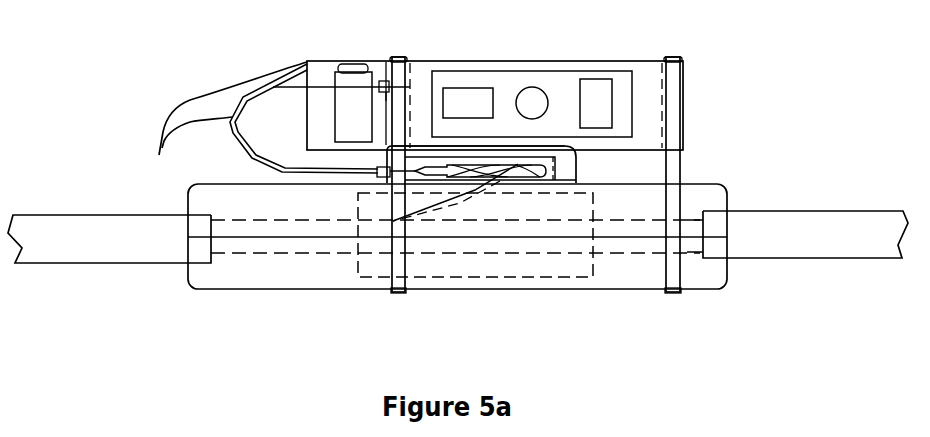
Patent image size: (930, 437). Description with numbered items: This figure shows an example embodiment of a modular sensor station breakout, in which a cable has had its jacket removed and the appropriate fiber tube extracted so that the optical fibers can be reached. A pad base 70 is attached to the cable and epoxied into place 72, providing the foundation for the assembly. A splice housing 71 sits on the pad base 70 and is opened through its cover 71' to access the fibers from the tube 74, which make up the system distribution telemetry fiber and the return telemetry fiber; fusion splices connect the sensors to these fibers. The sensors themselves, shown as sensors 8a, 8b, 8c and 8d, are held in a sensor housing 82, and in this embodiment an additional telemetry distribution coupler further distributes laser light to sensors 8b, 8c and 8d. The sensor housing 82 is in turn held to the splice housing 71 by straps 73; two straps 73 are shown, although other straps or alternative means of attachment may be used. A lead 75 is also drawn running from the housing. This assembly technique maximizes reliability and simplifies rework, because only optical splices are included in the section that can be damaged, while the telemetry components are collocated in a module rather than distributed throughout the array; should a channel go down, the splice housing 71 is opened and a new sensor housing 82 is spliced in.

The pad base 70 is at (238, 200).
The splice housing 71 is at (609, 169).
The cover 71' is at (614, 143).
The epoxied place 72 is at (565, 275).
The straps 73 is at (395, 292).
The tube 74 is at (452, 213).
The cable 75 is at (276, 121).
The sensor housing 82 is at (495, 82).
The sensor 8a is at (353, 103).
The sensor 8b is at (468, 103).
The sensor 8c is at (532, 103).
The sensor 8d is at (596, 103).